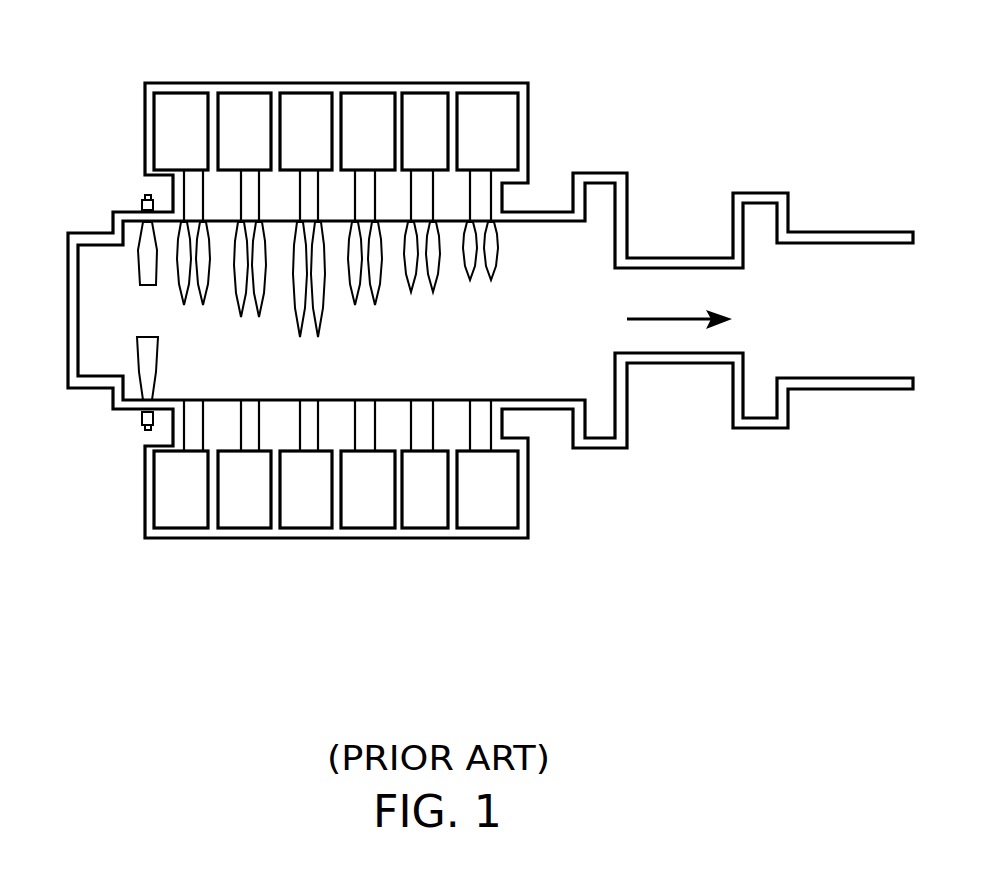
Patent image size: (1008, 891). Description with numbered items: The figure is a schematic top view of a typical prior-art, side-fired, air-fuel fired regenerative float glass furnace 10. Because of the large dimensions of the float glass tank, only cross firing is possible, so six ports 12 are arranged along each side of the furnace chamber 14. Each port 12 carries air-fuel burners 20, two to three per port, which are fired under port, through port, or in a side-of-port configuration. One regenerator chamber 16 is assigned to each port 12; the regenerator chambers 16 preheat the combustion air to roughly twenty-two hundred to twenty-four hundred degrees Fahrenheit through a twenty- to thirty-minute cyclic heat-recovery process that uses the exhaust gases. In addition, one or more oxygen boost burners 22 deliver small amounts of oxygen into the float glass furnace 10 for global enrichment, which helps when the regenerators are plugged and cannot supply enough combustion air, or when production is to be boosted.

The float glass furnace 10 is at (635, 61).
The ports 12 is at (307, 180).
The furnace chamber 14 is at (168, 327).
The regenerator chambers 16 is at (305, 500).
The air-fuel burners 20 is at (490, 232).
The oxygen boost burners 22 is at (146, 200).